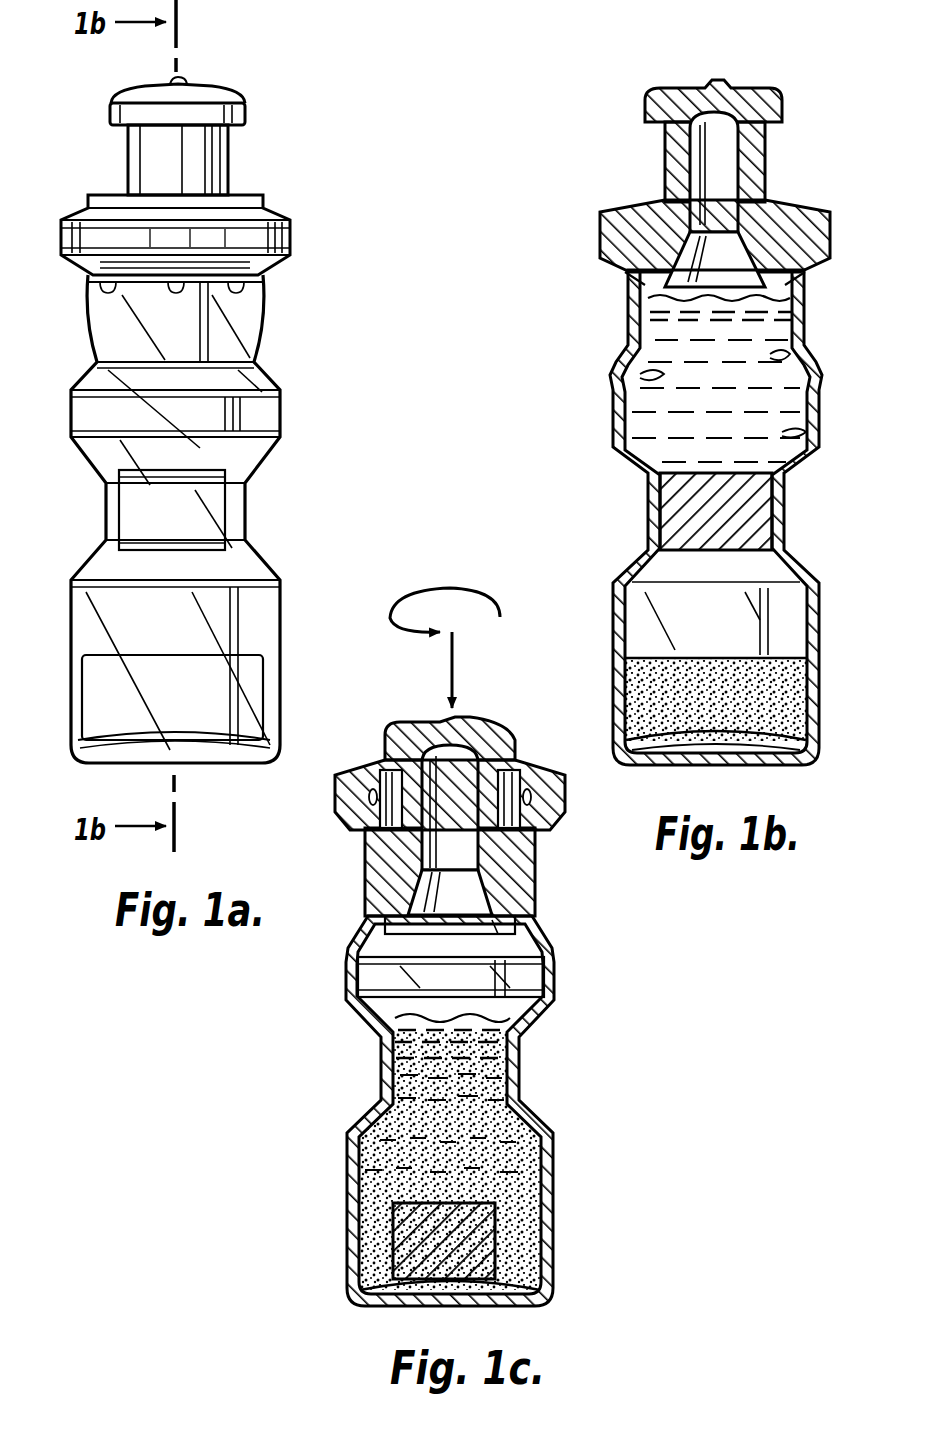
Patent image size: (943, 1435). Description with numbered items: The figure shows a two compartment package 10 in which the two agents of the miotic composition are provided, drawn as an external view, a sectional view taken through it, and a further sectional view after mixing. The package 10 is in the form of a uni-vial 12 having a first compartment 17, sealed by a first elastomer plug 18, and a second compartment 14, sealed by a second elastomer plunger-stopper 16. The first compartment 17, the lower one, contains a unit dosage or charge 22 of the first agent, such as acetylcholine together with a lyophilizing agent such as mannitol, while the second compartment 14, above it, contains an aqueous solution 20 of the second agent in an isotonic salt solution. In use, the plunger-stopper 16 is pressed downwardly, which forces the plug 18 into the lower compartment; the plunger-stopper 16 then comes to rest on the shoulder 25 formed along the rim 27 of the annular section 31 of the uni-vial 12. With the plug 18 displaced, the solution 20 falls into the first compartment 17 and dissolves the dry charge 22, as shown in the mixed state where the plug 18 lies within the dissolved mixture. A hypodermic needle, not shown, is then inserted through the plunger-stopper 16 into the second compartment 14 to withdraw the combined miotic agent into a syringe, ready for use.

In FIG. 1A, the two compartment package 10 is at (282, 143).
In FIG. 1B, the two compartment package 10 is at (628, 152).
In FIG. 1A, the uni-vial 12 is at (263, 322).
In FIG. 1B, the uni-vial 12 is at (716, 517).
In FIG. 1C, the uni-vial 12 is at (538, 1112).
In FIG. 1B, the second compartment 14 is at (782, 432).
In FIG. 1C, the second compartment 14 is at (378, 978).
In FIG. 1A, the second elastomer plunger-stopper 16 is at (145, 158).
In FIG. 1B, the second elastomer plunger-stopper 16 is at (764, 158).
In FIG. 1C, the second elastomer plunger-stopper 16 is at (490, 726).
In FIG. 1B, the first compartment 17 is at (790, 618).
In FIG. 1C, the first compartment 17 is at (378, 1183).
In FIG. 1A, the first elastomer plug 18 is at (233, 508).
In FIG. 1B, the first elastomer plug 18 is at (668, 516).
In FIG. 1C, the first elastomer plug 18 is at (555, 1232).
In FIG. 1B, the aqueous solution 20 is at (800, 332).
In FIG. 1C, the aqueous solution 20 is at (383, 1062).
In FIG. 1A, the unit dosage or charge 22 is at (265, 688).
In FIG. 1B, the unit dosage or charge 22 is at (790, 693).
In FIG. 1C, the unit dosage or charge 22 is at (520, 1062).
In FIG. 1B, the shoulder 25 is at (778, 358).
In FIG. 1C, the shoulder 25 is at (540, 916).
In FIG. 1B, the rim 27 is at (664, 374).
In FIG. 1C, the rim 27 is at (545, 938).
In FIG. 1B, the annular section 31 is at (640, 352).
In FIG. 1C, the annular section 31 is at (370, 910).